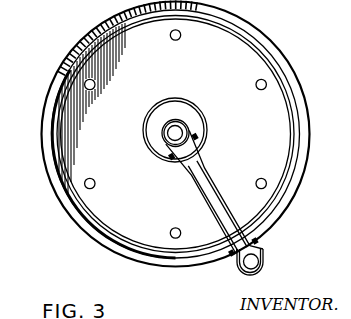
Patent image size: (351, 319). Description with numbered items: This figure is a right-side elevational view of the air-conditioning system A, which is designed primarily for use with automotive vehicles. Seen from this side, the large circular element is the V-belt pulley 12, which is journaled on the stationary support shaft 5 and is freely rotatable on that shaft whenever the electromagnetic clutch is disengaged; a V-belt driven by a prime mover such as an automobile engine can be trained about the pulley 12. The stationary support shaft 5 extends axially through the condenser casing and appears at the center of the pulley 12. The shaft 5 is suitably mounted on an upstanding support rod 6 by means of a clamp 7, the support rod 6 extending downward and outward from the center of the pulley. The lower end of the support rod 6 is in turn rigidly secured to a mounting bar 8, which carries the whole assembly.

The V-belt pulley 12 is at (270, 42).
The air-conditioning system A is at (70, 32).
The stationary support shaft 5 is at (180, 132).
The support rod 6 is at (230, 216).
The clamp 7 is at (258, 242).
The mounting bar 8 is at (254, 262).